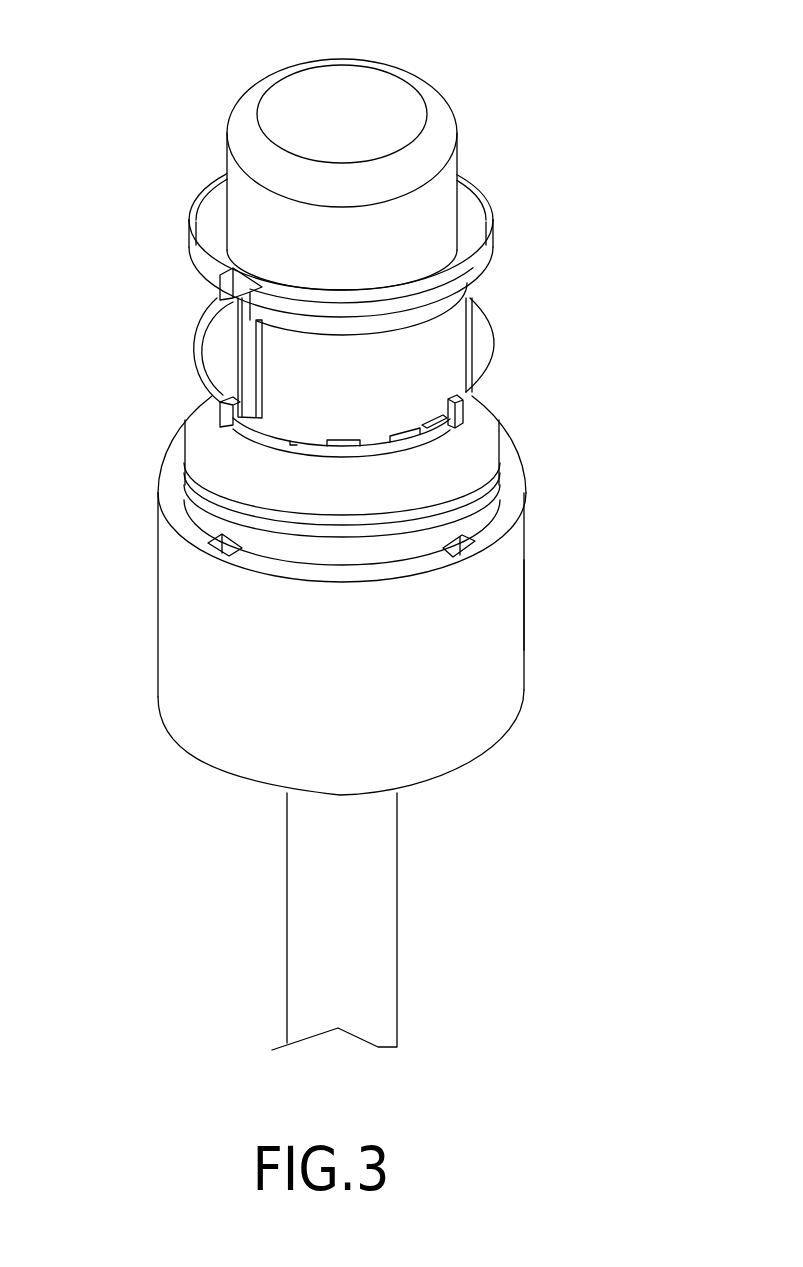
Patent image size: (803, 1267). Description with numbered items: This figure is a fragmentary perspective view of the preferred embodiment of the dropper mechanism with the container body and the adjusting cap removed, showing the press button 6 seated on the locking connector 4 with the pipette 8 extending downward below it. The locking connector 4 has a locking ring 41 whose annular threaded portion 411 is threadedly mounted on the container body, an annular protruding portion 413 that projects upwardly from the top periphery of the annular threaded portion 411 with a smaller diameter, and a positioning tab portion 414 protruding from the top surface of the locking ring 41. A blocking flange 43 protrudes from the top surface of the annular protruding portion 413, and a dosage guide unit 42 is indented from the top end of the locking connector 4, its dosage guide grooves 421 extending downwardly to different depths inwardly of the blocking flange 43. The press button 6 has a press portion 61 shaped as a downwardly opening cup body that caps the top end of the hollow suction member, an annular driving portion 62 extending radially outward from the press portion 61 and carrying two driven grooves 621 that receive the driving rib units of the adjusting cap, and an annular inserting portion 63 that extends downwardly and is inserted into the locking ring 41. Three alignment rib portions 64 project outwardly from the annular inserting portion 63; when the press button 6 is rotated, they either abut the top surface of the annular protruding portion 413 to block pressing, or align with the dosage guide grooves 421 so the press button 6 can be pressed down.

The locking connector 4 is at (525, 673).
The locking ring 41 is at (498, 718).
The annular threaded portion 411 is at (487, 626).
The annular protruding portion 413 is at (218, 458).
The positioning tab portion 414 is at (470, 537).
The dosage guide unit 42 is at (450, 429).
The dosage guide grooves 421 is at (312, 440).
The blocking flange 43 is at (483, 337).
The press button 6 is at (433, 88).
The press portion 61 is at (363, 107).
The annular driving portion 62 is at (483, 200).
The driven grooves 621 is at (230, 277).
The annular inserting portion 63 is at (427, 362).
The alignment rib portions 64 is at (470, 296).
The pipette 8 is at (342, 935).